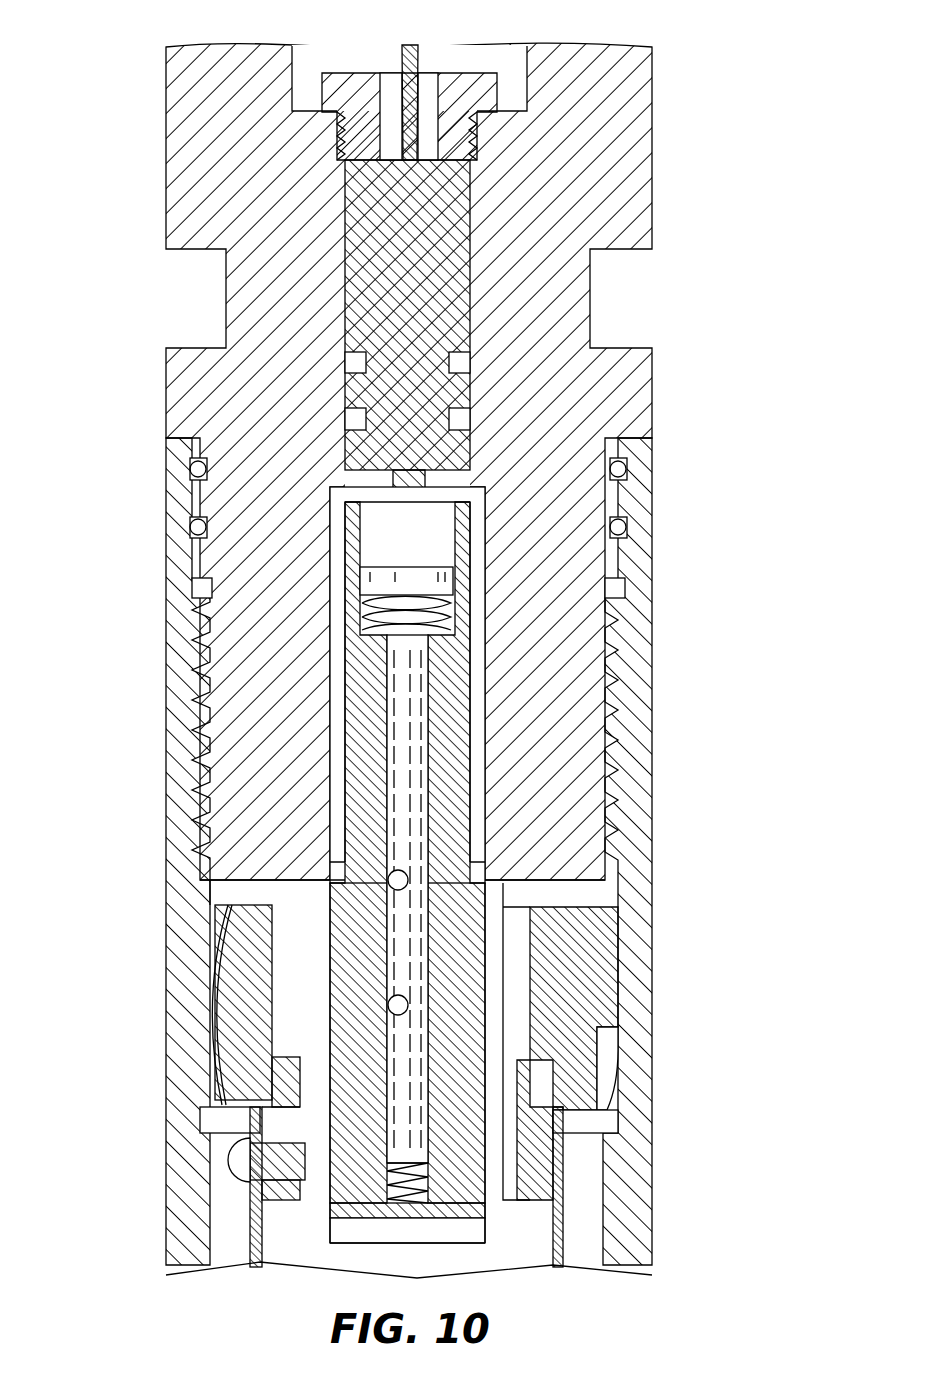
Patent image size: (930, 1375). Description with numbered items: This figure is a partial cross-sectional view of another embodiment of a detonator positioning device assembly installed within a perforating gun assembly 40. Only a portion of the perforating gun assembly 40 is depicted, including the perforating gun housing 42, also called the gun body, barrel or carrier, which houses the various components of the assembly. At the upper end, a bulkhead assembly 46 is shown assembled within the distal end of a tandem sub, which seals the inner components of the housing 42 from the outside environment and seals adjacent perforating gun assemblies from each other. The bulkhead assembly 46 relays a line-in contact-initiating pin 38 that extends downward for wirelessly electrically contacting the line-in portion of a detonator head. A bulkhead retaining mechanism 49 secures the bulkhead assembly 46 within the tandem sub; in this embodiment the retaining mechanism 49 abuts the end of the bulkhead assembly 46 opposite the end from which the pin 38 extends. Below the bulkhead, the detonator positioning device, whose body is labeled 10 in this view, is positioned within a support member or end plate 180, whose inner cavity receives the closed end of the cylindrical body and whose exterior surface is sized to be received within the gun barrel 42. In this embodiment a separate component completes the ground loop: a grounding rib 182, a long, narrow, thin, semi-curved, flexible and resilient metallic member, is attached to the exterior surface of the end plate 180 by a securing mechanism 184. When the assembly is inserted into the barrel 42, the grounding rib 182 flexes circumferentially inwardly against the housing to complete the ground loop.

The valve rod 10 is at (438, 746).
The line-in contact-initiating pin 38 is at (397, 487).
The perforating gun assembly 40 is at (662, 546).
The perforating gun housing 42 is at (632, 763).
The bulkhead assembly 46 is at (472, 245).
The bulkhead retaining mechanism 49 is at (463, 87).
The end plate 180 is at (585, 975).
The grounding rib 182 is at (208, 940).
The securing mechanism 184 is at (240, 1160).